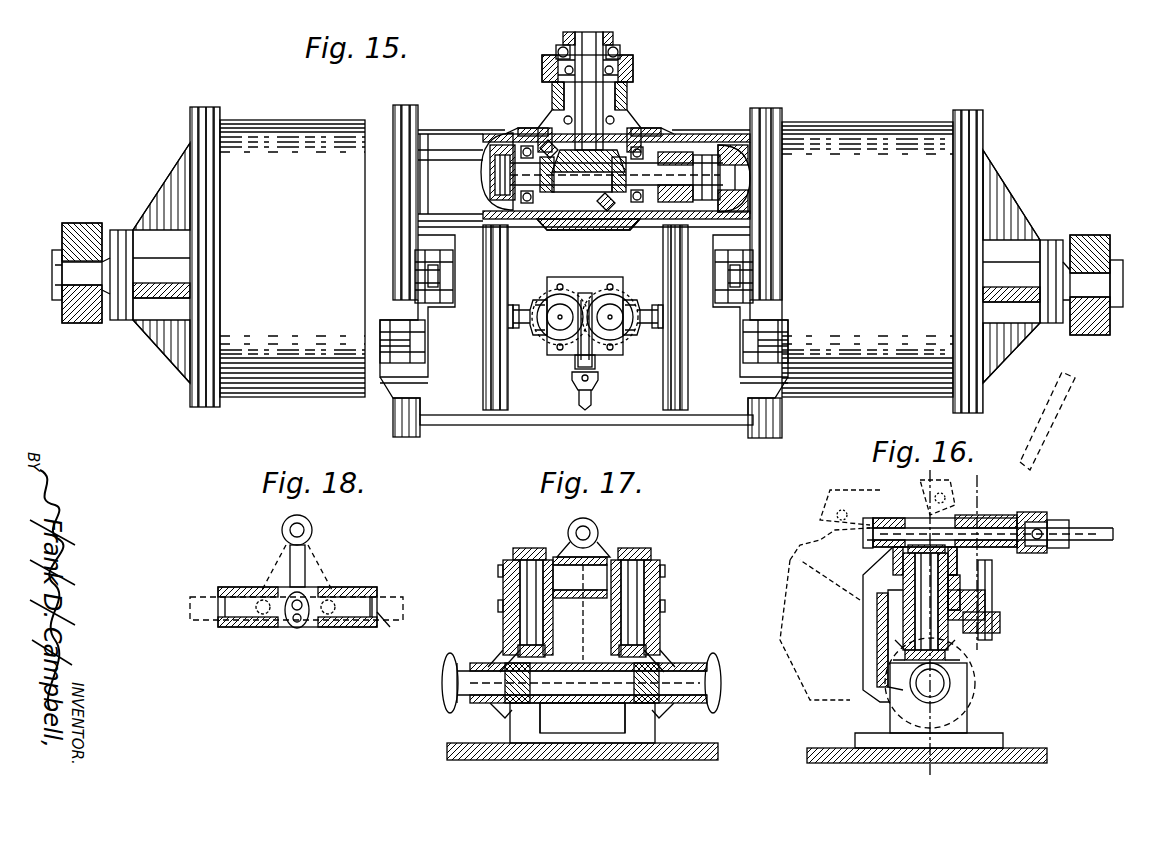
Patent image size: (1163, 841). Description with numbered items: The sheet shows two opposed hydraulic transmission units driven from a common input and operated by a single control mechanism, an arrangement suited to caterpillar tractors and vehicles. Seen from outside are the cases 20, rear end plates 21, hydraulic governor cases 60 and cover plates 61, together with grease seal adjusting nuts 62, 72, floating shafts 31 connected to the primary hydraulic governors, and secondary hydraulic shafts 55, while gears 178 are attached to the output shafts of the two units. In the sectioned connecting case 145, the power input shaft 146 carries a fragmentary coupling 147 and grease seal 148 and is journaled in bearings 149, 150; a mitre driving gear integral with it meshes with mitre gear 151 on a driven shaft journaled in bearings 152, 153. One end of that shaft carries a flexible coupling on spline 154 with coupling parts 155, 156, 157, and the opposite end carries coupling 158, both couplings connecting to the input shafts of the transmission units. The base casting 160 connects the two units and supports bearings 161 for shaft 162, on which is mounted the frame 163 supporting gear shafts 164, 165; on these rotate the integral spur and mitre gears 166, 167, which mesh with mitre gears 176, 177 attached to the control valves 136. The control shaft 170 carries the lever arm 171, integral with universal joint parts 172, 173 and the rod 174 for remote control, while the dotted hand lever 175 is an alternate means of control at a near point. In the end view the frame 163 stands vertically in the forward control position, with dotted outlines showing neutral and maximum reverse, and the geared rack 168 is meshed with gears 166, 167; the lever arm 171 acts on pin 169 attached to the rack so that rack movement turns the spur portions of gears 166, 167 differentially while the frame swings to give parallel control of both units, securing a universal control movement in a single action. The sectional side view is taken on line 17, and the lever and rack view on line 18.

In FIG. 15, the case 20 is at (300, 120).
In FIG. 15, the rear end plate 21 is at (190, 125).
In FIG. 15, the floating shaft 31 is at (428, 275).
In FIG. 15, the secondary hydraulic shaft 55 is at (390, 340).
In FIG. 15, the hydraulic governor case 60 is at (452, 415).
In FIG. 15, the cover plate 61 is at (508, 250).
In FIG. 15, the grease seal adjusting nut 62 is at (418, 262).
In FIG. 15, the grease seal adjusting nut 72 is at (395, 335).
In FIG. 15, the valve 136 is at (513, 316).
In FIG. 17, the valve 136 is at (442, 683).
In FIG. 15, the connecting case 145 is at (455, 125).
In FIG. 15, the power input shaft 146 is at (603, 32).
In FIG. 15, the coupling 147 is at (613, 45).
In FIG. 15, the grease seal 148 is at (620, 52).
In FIG. 15, the bearing 149 is at (633, 72).
In FIG. 15, the bearing 150 is at (627, 100).
In FIG. 15, the mitre gear 151 is at (603, 198).
In FIG. 15, the bearing 152 is at (520, 140).
In FIG. 15, the bearing 153 is at (640, 150).
In FIG. 15, the spline 154 is at (660, 150).
In FIG. 15, the coupling part 155 is at (680, 150).
In FIG. 15, the coupling part 156 is at (715, 152).
In FIG. 15, the coupling part 157 is at (750, 168).
In FIG. 15, the coupling 158 is at (490, 160).
In FIG. 17, the base casting 160 is at (710, 760).
In FIG. 16, the base casting 160 is at (1025, 748).
In FIG. 15, the bearing 161 is at (610, 283).
In FIG. 17, the bearing 161 is at (510, 728).
In FIG. 16, the bearing 161 is at (967, 728).
In FIG. 17, the shaft 162 is at (588, 685).
In FIG. 16, the shaft 162 is at (950, 680).
In FIG. 15, the frame 163 is at (590, 277).
In FIG. 18, the frame 163 is at (358, 587).
In FIG. 17, the frame 163 is at (503, 575).
In FIG. 16, the frame 163 is at (877, 610).
In FIG. 15, the gear shaft 164 is at (552, 330).
In FIG. 17, the gear shaft 164 is at (520, 560).
In FIG. 16, the gear shaft 164 is at (903, 575).
In FIG. 15, the gear shaft 165 is at (618, 330).
In FIG. 17, the gear shaft 165 is at (635, 560).
In FIG. 15, the integral spur and mitre gear 166 is at (538, 300).
In FIG. 17, the integral spur and mitre gear 166 is at (503, 612).
In FIG. 16, the integral spur and mitre gear 166 is at (903, 628).
In FIG. 15, the integral spur and mitre gear 167 is at (632, 300).
In FIG. 17, the integral spur and mitre gear 167 is at (660, 622).
In FIG. 18, the geared rack 168 is at (380, 627).
In FIG. 16, the geared rack 168 is at (1000, 622).
In FIG. 18, the pin 169 is at (290, 626).
In FIG. 16, the pin 169 is at (985, 606).
In FIG. 18, the control shaft 170 is at (282, 528).
In FIG. 17, the control shaft 170 is at (598, 528).
In FIG. 16, the control shaft 170 is at (915, 522).
In FIG. 15, the lever arm 171 is at (578, 345).
In FIG. 18, the lever arm 171 is at (300, 565).
In FIG. 16, the lever arm 171 is at (992, 565).
In FIG. 15, the universal joint part 172 is at (595, 362).
In FIG. 16, the universal joint part 172 is at (1030, 512).
In FIG. 15, the universal joint part 173 is at (598, 384).
In FIG. 16, the universal joint part 173 is at (1062, 520).
In FIG. 15, the rod 174 is at (582, 408).
In FIG. 16, the rod 174 is at (1095, 526).
In FIG. 16, the hand lever 175 is at (1058, 432).
In FIG. 15, the mitre gear 176 is at (510, 325).
In FIG. 17, the mitre gear 176 is at (490, 660).
In FIG. 15, the mitre gear 177 is at (662, 305).
In FIG. 17, the mitre gear 177 is at (676, 665).
In FIG. 15, the gear 178 is at (82, 223).
In FIG. 16, the section line 17 is at (929, 621).
In FIG. 16, the section line 18 is at (978, 559).